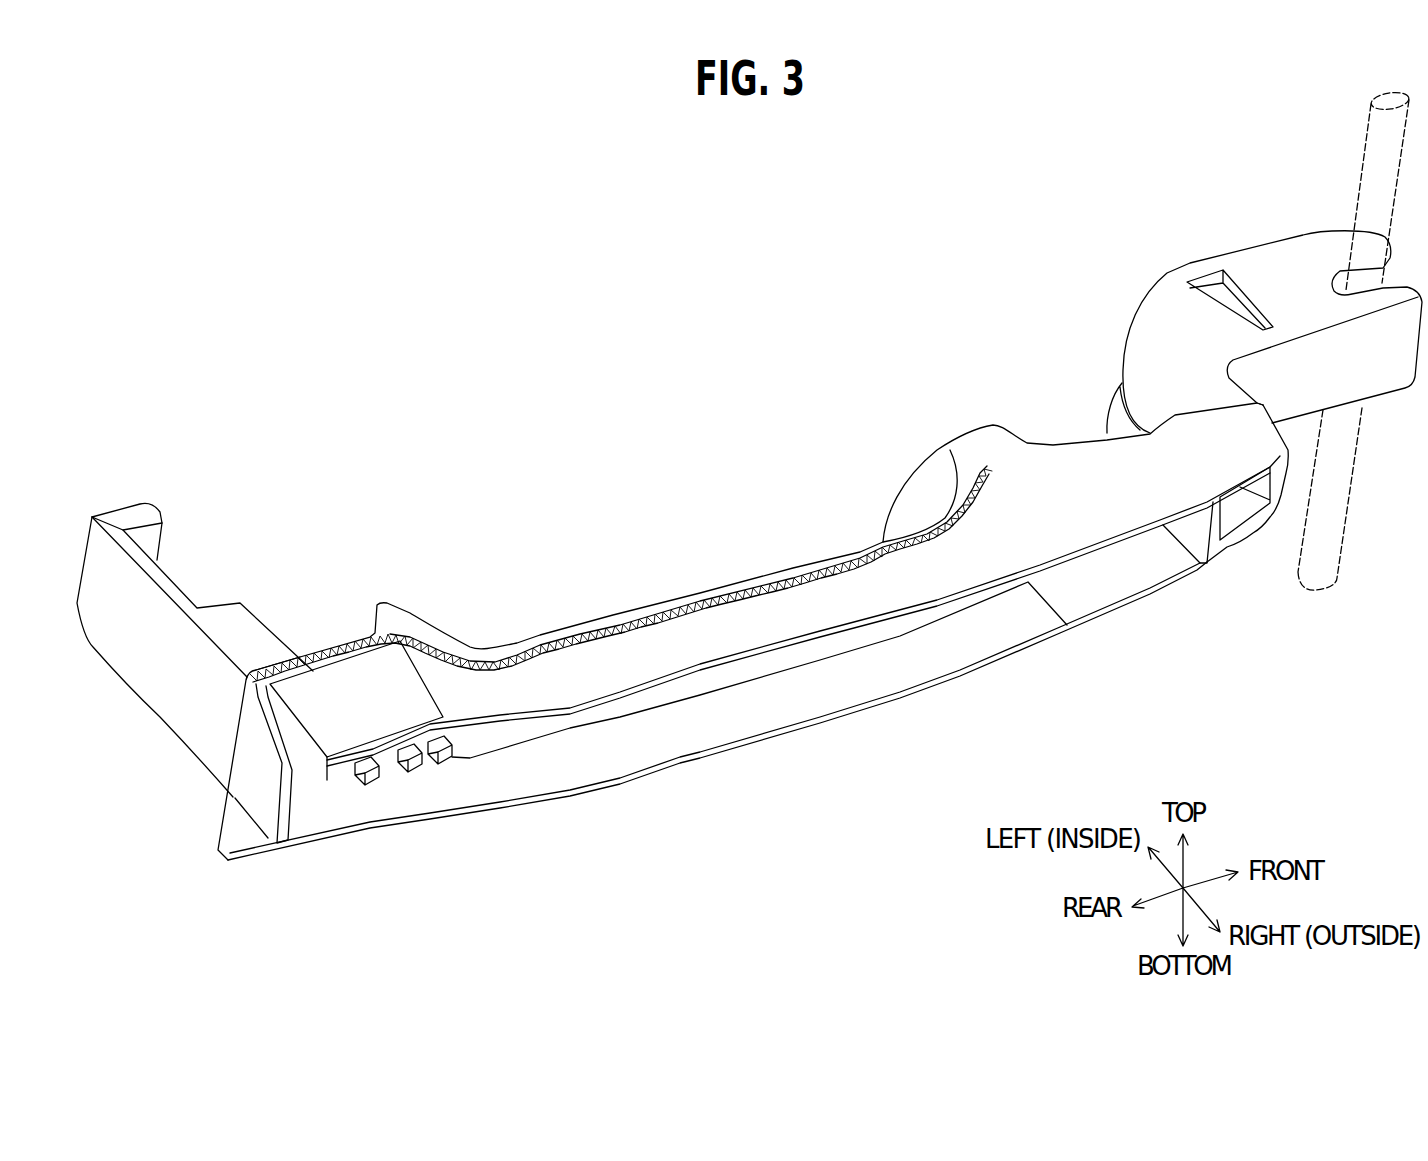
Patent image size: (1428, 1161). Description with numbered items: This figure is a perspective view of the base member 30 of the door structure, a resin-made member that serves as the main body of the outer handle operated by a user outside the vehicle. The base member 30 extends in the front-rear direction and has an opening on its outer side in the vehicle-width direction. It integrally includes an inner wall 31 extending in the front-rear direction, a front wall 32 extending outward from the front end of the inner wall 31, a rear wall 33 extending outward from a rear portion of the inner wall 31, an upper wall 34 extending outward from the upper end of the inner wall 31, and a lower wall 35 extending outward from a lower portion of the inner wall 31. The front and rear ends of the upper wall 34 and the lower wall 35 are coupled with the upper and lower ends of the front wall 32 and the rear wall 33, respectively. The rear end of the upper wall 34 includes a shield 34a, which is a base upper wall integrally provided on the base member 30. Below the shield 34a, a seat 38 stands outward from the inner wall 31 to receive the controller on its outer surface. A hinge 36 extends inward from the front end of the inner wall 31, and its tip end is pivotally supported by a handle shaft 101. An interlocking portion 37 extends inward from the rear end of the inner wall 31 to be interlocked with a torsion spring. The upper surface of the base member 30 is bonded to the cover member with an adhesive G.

The base member 30 is at (850, 392).
The inner wall 31 is at (503, 733).
The front wall 32 is at (1287, 462).
The rear wall 33 is at (308, 800).
The upper wall 34 is at (753, 627).
The shield 34a is at (343, 690).
The lower wall 35 is at (783, 703).
The hinge 36 is at (1302, 257).
The interlocking portion 37 is at (163, 590).
The seat 38 is at (383, 787).
The handle shaft 101 is at (1363, 137).
The adhesive G is at (590, 630).